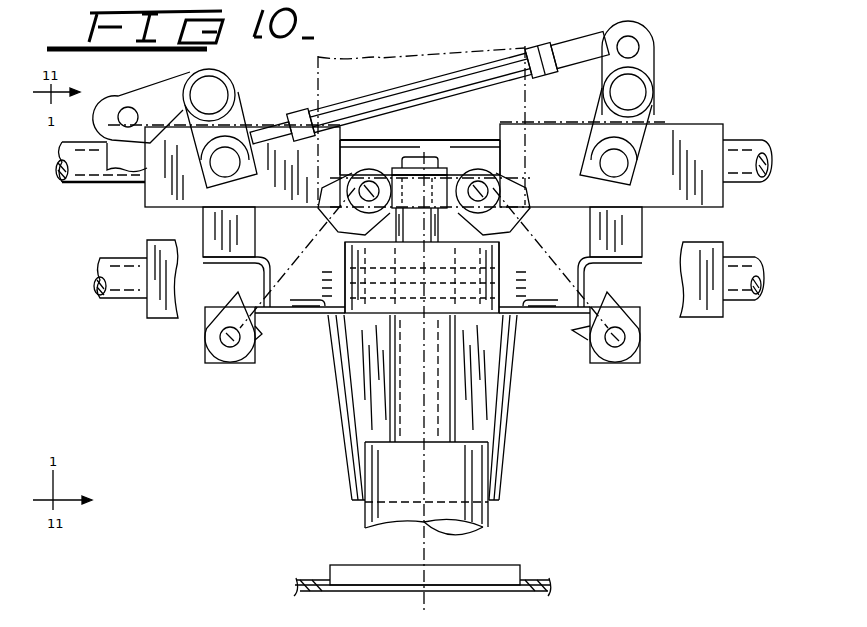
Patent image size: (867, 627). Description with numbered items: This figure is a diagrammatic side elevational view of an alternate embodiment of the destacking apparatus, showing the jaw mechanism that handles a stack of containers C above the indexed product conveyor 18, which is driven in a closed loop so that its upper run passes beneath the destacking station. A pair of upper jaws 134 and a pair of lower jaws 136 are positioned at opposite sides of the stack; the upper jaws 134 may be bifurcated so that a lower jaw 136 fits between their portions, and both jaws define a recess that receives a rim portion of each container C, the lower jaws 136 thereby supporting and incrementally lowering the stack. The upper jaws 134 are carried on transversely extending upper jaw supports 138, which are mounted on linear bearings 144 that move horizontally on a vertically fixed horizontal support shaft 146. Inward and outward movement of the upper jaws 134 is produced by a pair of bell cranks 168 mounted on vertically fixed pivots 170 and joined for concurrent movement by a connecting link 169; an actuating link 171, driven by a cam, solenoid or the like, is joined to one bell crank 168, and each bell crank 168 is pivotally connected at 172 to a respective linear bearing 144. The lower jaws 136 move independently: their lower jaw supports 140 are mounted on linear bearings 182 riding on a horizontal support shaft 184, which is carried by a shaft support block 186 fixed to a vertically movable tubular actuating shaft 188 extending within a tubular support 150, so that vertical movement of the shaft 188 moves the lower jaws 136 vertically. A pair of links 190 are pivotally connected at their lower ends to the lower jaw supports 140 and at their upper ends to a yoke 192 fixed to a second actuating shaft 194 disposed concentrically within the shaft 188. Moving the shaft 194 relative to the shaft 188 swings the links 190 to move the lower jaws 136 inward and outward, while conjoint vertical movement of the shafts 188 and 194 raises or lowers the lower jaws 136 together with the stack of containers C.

The product conveyor 18 is at (535, 573).
The upper jaws 134 is at (270, 279).
The lower jaws 136 is at (278, 312).
The upper jaw supports 138 is at (248, 232).
The lower jaw supports 140 is at (214, 363).
The linear bearings 144 is at (147, 197).
The horizontal support shaft 146 is at (74, 184).
The tubular support 150 is at (484, 517).
The bell cranks 168 is at (240, 108).
The connecting link 169 is at (416, 86).
The pivots 170 is at (214, 93).
The actuating link 171 is at (115, 150).
The pivotal connection 172 is at (222, 180).
The linear bearings 182 is at (155, 320).
The horizontal support shaft 184 is at (120, 302).
The shaft support block 186 is at (403, 313).
The tubular actuating shaft 188 is at (426, 485).
The links 190 is at (263, 341).
The yoke 192 is at (392, 215).
The actuating shaft 194 is at (440, 230).
The containers C is at (503, 420).